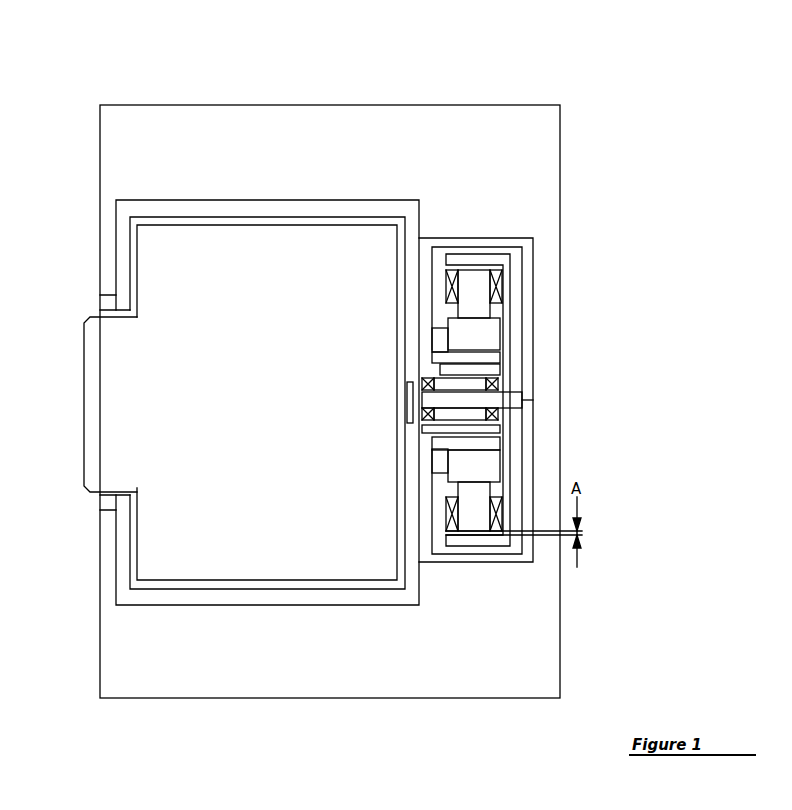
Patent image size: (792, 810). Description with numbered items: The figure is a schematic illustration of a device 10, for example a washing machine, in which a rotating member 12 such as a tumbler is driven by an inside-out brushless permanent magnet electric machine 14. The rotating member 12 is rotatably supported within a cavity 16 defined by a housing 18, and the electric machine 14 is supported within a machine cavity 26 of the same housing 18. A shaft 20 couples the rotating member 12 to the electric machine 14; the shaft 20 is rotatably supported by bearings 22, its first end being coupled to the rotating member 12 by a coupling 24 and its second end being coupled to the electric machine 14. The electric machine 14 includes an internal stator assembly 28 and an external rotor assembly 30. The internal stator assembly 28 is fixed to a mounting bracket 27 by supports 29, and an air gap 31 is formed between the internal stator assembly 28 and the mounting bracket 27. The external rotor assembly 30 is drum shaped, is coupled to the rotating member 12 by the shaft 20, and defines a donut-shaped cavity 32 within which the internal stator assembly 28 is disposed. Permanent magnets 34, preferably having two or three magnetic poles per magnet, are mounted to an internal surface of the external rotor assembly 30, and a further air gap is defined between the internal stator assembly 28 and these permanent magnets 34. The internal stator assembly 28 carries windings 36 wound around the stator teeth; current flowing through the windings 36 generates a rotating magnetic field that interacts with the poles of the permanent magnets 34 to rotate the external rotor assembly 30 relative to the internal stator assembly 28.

The device 10 is at (460, 63).
The rotating member 12 is at (205, 217).
The brushless permanent magnet electric machine 14 is at (529, 401).
The cavity 16 is at (300, 200).
The housing 18 is at (275, 105).
The shaft 20 is at (515, 408).
The bearings 22 is at (413, 380).
The coupling 24 is at (410, 418).
The machine cavity 26 is at (435, 238).
The mounting bracket 27 is at (418, 438).
The internal stator assembly 28 is at (505, 325).
The supports 29 is at (437, 332).
The external rotor assembly 30 is at (525, 290).
The air gap 31 is at (443, 360).
The donut-shaped cavity 32 is at (508, 353).
The permanent magnets 34 is at (487, 256).
The windings 36 is at (530, 258).